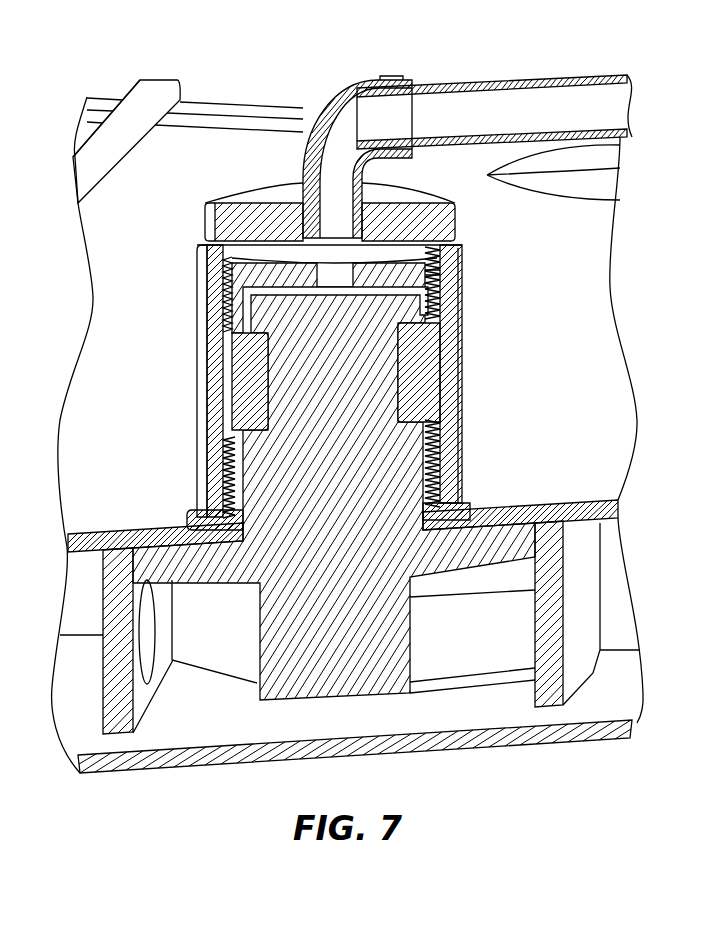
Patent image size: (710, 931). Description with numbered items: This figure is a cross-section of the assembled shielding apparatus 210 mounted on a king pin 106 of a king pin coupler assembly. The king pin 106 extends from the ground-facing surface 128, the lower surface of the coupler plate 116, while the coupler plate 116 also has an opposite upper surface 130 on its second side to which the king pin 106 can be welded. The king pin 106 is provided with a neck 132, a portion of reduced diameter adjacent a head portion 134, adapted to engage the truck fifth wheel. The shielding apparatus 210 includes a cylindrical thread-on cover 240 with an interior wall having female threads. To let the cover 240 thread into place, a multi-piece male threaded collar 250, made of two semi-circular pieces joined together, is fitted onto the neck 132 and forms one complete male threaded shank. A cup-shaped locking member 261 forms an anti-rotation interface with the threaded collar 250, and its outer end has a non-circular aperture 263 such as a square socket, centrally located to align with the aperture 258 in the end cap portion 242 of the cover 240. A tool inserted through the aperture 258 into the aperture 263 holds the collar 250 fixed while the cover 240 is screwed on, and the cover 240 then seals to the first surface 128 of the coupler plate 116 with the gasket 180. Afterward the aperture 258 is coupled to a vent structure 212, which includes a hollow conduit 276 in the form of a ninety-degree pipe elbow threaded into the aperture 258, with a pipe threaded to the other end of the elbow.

The king pin 106 is at (358, 570).
The coupler plate 116 is at (588, 333).
The ground-facing surface 128 is at (597, 493).
The upper surface 130 is at (580, 528).
The neck 132 is at (434, 378).
The head portion 134 is at (428, 306).
The gasket 180 is at (195, 507).
The shielding apparatus 210 is at (584, 286).
The vent structure 212 is at (294, 93).
The thread-on cover 240 is at (462, 438).
The end cap portion 242 is at (207, 220).
The multi-piece male threaded collar 250 is at (240, 387).
The aperture 258 is at (300, 217).
The cup-shaped locking member 261 is at (445, 272).
The non-circular aperture 263 is at (440, 256).
The hollow conduit 276 is at (358, 80).